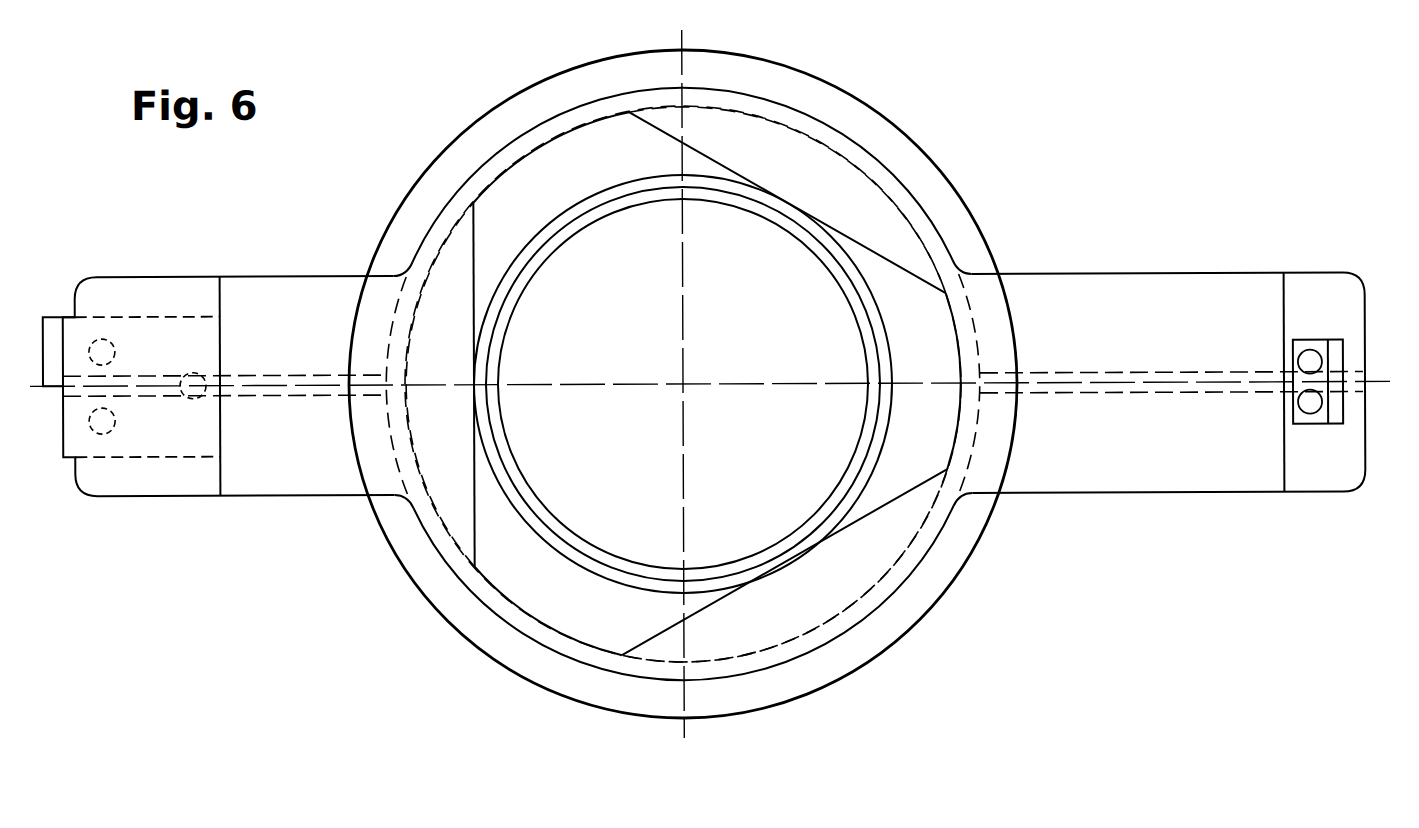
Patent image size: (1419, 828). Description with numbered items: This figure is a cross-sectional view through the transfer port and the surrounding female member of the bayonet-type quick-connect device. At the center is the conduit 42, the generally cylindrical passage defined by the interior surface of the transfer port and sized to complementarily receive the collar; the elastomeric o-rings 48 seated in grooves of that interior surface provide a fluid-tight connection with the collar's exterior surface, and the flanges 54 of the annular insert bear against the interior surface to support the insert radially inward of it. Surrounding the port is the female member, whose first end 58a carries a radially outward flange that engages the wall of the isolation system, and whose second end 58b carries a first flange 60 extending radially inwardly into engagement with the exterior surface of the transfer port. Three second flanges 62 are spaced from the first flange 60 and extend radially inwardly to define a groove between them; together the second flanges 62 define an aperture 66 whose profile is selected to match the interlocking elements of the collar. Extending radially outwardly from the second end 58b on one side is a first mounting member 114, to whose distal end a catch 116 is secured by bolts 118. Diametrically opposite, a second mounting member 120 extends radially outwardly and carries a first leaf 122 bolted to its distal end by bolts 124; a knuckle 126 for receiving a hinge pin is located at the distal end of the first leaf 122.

The conduit 42 is at (682, 383).
The elastomeric o-rings 48 is at (478, 373).
The flanges 54 is at (512, 296).
The first end of the female member 58a is at (882, 130).
The second end of the female member 58b is at (915, 225).
The first flange 60 is at (717, 383).
The second flanges 62 is at (676, 384).
The aperture 66 is at (631, 113).
The first mounting member 114 is at (1180, 302).
The catch 116 is at (1335, 350).
The bolts 118 is at (1299, 371).
The second mounting member 120 is at (247, 482).
The first leaf 122 is at (142, 343).
The bolts 124 is at (110, 358).
The knuckle 126 is at (53, 350).